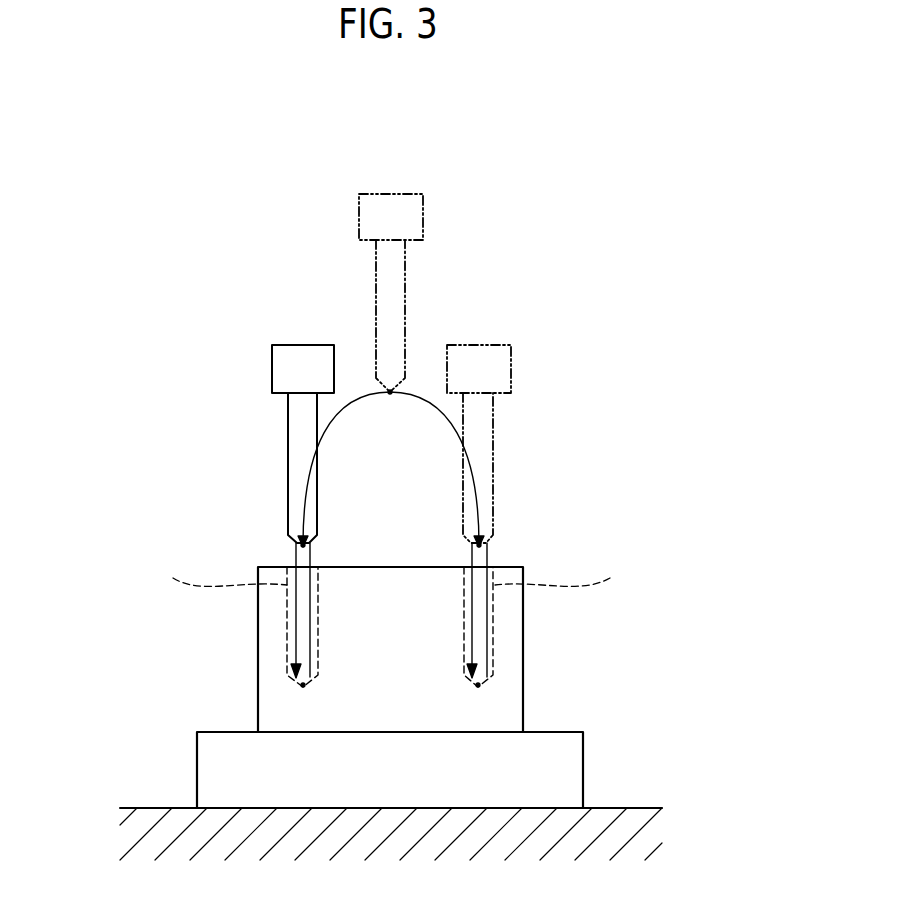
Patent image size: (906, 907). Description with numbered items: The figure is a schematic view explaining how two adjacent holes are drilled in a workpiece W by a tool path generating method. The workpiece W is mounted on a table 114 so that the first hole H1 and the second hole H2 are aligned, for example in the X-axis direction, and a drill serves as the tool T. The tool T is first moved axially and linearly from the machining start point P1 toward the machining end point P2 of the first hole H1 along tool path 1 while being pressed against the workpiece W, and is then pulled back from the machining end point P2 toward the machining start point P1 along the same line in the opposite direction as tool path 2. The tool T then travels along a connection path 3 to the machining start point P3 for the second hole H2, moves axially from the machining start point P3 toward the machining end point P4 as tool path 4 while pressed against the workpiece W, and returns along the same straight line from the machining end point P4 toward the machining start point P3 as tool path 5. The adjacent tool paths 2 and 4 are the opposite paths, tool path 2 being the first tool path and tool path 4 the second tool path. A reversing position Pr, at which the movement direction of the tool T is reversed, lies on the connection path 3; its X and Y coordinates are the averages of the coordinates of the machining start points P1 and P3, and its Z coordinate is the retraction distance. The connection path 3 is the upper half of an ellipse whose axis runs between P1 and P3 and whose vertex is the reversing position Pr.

The tool path 1 is at (296, 630).
The tool path 2 is at (310, 608).
The connection path 3 is at (357, 403).
The tool path 4 is at (470, 608).
The tool path 5 is at (486, 630).
The table 114 is at (220, 770).
The tool T is at (288, 368).
The workpiece W is at (512, 670).
The machining start point P1 is at (292, 565).
The machining end point P2 is at (303, 685).
The machining start point P3 is at (490, 565).
The machining end point P4 is at (478, 685).
The reversing position Pr is at (738, 217).
The first hole H1 is at (214, 575).
The second hole H2 is at (567, 575).